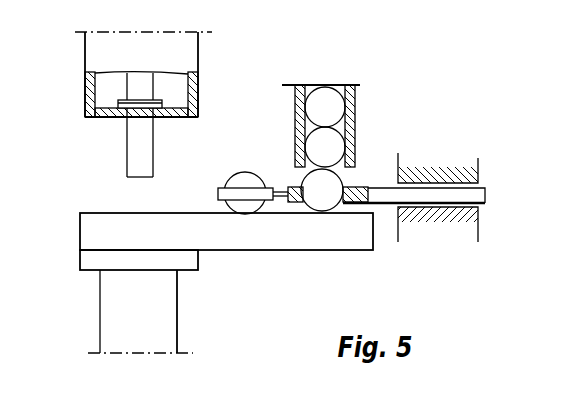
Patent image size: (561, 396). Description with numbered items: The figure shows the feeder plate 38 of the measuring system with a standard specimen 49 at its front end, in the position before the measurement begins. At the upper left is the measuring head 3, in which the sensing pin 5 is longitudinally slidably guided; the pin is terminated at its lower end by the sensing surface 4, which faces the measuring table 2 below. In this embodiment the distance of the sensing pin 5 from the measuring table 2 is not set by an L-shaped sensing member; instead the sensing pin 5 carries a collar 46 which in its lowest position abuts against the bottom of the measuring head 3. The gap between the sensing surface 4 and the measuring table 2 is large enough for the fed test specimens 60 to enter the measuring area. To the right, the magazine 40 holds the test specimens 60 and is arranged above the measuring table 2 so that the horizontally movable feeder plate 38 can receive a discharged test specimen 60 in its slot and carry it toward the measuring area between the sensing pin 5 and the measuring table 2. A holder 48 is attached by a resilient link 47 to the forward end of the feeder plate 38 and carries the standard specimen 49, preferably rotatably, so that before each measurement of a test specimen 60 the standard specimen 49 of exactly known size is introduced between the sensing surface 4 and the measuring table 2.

The measuring table 2 is at (303, 248).
The measuring head 3 is at (195, 87).
The sensing surface 4 is at (147, 178).
The sensing pin 5 is at (137, 135).
The feeder plate 38 is at (448, 195).
The magazine 40 is at (347, 112).
The collar 46 is at (118, 100).
The resilient link 47 is at (280, 188).
The holder 48 is at (255, 193).
The standard specimen 49 is at (238, 184).
The test specimen 60 is at (330, 186).